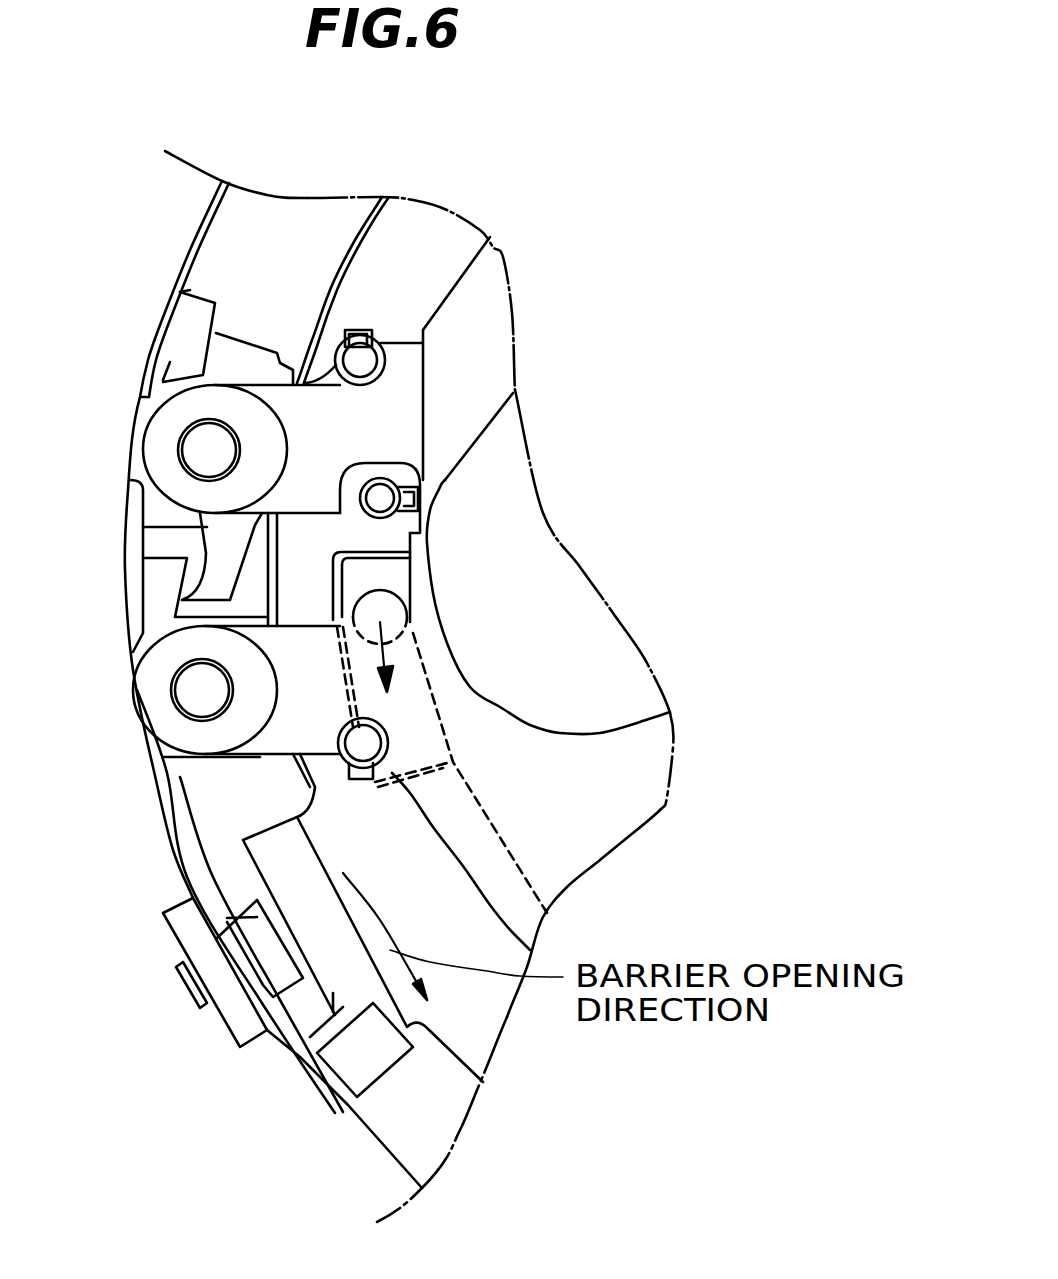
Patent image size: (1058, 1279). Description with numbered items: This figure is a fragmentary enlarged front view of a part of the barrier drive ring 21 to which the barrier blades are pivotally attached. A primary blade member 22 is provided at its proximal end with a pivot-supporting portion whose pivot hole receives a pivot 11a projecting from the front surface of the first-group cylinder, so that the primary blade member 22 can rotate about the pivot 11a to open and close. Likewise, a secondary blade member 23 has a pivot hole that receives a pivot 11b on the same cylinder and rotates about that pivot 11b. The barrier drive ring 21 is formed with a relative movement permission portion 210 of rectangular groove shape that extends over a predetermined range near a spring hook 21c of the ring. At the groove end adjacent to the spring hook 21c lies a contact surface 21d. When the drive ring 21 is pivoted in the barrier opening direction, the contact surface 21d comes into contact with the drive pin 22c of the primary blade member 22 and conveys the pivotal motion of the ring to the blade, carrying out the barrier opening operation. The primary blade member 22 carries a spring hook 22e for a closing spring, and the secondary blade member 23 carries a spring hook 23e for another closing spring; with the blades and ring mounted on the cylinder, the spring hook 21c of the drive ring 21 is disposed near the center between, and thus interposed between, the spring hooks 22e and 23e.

The pivot 11a is at (187, 697).
The pivot 11b is at (197, 450).
The barrier drive ring 21 is at (485, 1040).
The spring hook 21c is at (377, 463).
The contact surface 21d is at (370, 552).
The relative movement permission portion 210 is at (397, 583).
The primary blade member 22 is at (657, 778).
The drive pin 22c is at (383, 607).
The spring hook 22e is at (390, 737).
The secondary blade member 23 is at (495, 303).
The spring hook 23e is at (362, 327).